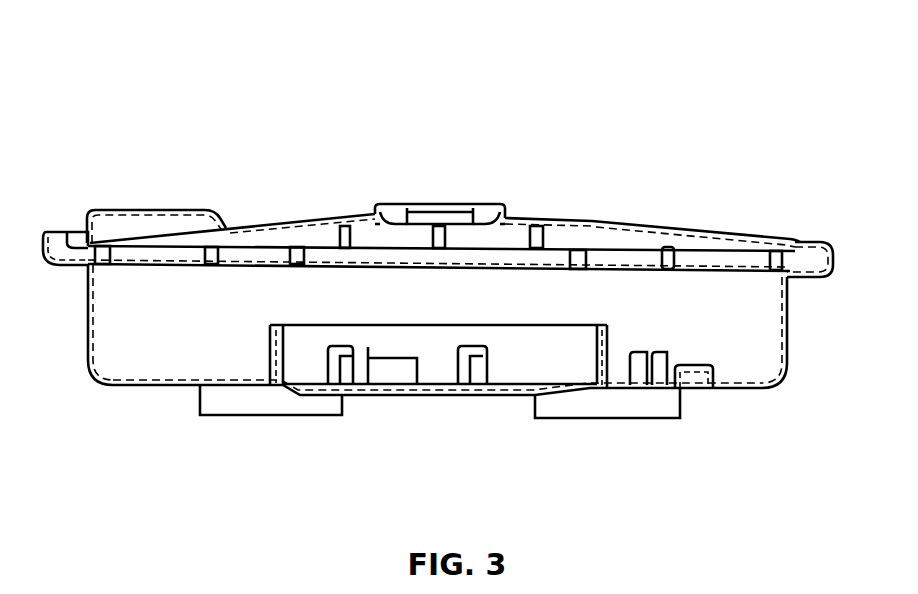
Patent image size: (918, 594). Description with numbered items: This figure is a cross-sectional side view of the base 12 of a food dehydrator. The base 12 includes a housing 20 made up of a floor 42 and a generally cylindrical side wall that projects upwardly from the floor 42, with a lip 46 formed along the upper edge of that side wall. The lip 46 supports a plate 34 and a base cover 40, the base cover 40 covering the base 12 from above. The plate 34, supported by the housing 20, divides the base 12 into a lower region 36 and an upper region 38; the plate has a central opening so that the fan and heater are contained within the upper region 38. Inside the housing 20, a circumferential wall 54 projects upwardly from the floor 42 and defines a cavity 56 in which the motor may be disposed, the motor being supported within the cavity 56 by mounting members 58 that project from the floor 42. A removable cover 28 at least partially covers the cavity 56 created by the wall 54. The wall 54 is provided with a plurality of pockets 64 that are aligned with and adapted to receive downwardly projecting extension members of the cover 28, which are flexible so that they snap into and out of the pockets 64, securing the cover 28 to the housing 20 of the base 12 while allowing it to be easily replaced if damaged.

The base 12 is at (371, 92).
The housing 20 is at (82, 346).
The cover 28 is at (325, 325).
The plate 34 is at (717, 272).
The lower region 36 is at (738, 345).
The upper region 38 is at (573, 233).
The base cover 40 is at (645, 205).
The floor 42 is at (195, 383).
The lip 46 is at (54, 238).
The circumferential wall 54 is at (267, 342).
The cavity 56 is at (542, 358).
The mounting members 58 is at (462, 395).
The pockets 64 is at (437, 348).